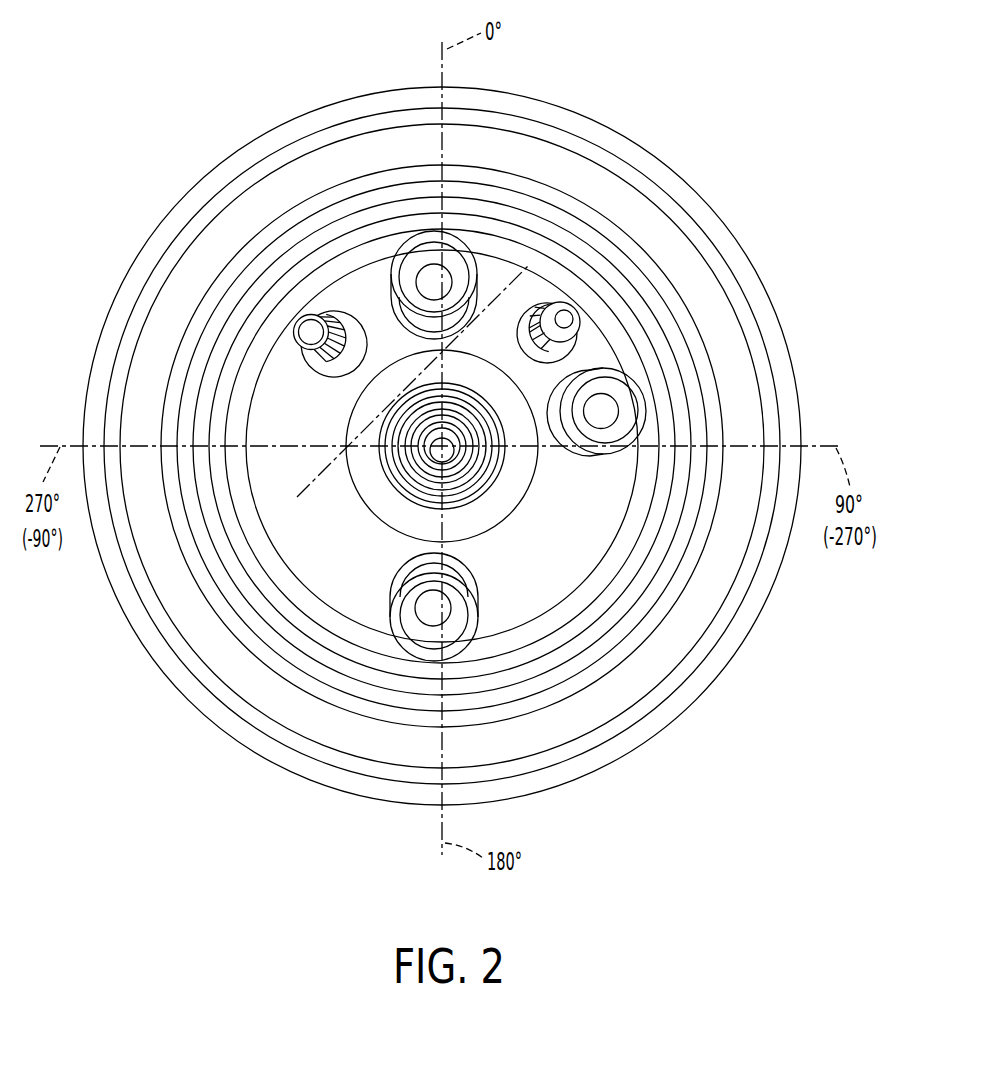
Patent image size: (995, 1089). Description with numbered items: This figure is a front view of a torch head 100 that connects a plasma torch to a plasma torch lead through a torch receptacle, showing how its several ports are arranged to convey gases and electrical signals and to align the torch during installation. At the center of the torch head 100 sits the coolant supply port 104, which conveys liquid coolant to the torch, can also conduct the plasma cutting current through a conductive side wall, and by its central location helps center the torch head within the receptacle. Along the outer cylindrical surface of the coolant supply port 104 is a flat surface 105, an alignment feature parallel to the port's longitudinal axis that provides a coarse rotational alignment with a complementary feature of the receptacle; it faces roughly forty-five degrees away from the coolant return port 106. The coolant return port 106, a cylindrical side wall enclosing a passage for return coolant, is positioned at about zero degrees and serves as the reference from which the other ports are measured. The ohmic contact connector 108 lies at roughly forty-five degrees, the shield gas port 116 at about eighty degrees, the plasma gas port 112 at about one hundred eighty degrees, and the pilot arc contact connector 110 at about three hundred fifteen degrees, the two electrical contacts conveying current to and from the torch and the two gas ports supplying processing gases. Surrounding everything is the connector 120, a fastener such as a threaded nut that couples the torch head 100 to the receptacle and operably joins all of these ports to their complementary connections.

The torch head 100 is at (222, 828).
The coolant supply port 104 is at (477, 470).
The flat surface 105 is at (390, 415).
The coolant return port 106 is at (449, 242).
The ohmic contact connector 108 is at (573, 323).
The pilot arc contact connector 110 is at (303, 328).
The plasma gas port 112 is at (403, 638).
The shield gas port 116 is at (643, 403).
The connector 120 is at (333, 788).